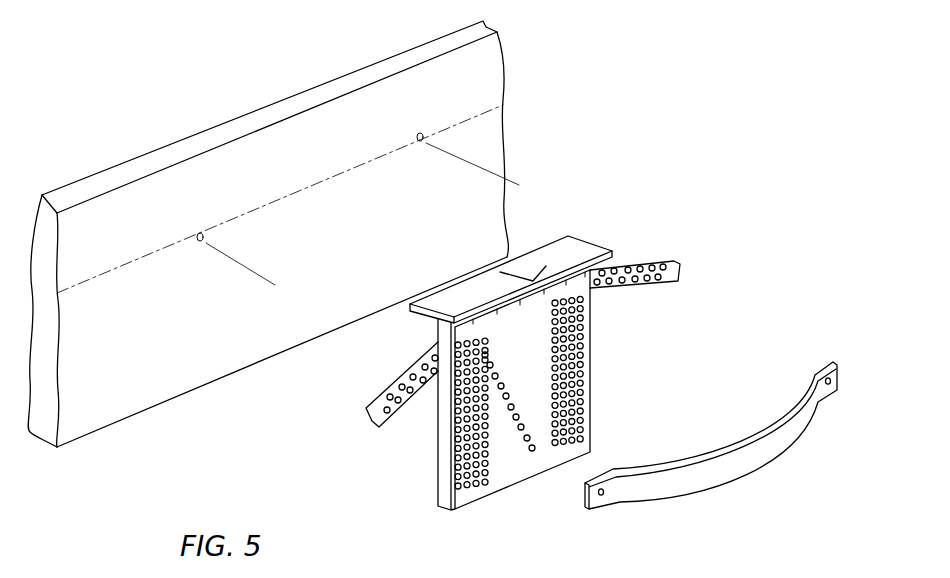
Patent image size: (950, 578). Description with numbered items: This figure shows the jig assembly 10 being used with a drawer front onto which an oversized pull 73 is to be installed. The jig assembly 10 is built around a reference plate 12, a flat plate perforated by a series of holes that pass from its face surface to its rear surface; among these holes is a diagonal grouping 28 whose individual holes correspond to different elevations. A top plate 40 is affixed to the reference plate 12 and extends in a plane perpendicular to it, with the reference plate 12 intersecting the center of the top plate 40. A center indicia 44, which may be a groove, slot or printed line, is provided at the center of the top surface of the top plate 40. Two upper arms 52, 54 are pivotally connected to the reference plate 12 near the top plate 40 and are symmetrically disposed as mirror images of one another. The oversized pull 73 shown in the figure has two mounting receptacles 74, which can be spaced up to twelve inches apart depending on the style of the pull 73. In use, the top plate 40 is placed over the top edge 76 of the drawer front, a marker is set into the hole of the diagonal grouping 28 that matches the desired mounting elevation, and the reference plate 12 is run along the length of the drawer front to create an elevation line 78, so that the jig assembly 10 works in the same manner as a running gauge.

The jig assembly 10 is at (511, 356).
The reference plate 12 is at (530, 461).
The diagonal grouping 28 is at (524, 454).
The top plate 40 is at (544, 263).
The center indicia 44 is at (523, 280).
The upper arm 52 is at (381, 404).
The upper arm 54 is at (672, 263).
The oversized pull 73 is at (728, 437).
The mounting receptacle 74 is at (832, 384).
The top edge 76 is at (279, 112).
The elevation line 78 is at (320, 182).